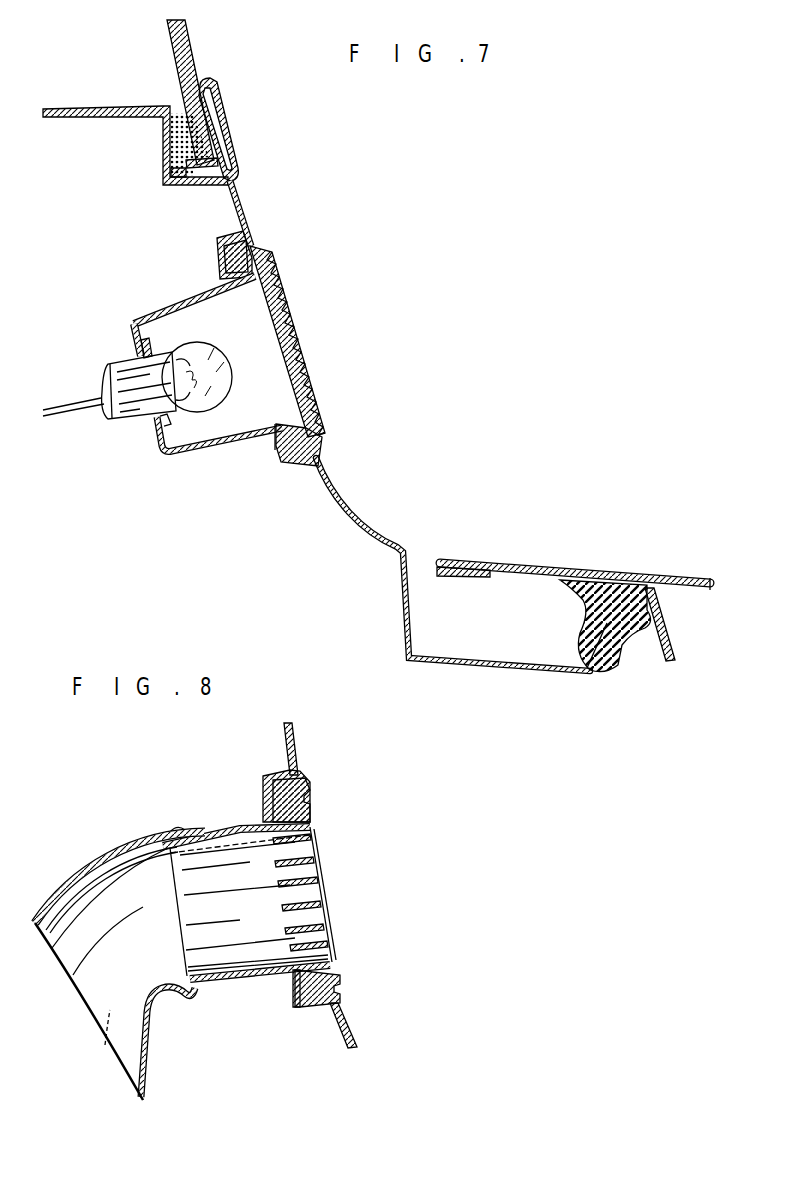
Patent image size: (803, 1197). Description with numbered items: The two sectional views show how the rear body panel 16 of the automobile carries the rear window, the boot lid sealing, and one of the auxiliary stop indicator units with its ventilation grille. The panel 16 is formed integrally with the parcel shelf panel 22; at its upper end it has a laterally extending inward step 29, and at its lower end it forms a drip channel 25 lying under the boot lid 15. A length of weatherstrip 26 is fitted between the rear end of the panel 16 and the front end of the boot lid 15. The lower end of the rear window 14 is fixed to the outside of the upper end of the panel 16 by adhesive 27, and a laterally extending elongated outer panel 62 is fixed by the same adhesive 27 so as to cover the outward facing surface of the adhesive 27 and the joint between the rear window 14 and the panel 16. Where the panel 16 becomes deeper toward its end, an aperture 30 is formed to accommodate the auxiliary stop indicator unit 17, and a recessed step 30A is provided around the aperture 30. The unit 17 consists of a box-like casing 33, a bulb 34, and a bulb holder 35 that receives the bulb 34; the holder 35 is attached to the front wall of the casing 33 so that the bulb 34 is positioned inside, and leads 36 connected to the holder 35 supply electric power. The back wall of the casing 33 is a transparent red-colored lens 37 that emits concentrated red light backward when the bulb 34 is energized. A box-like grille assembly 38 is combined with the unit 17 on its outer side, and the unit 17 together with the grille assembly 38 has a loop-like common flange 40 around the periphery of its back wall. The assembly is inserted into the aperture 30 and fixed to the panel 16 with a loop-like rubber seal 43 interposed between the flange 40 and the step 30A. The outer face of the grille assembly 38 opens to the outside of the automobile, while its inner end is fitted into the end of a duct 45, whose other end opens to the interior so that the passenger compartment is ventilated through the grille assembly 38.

In FIG. 7, the rear window 14 is at (194, 57).
In FIG. 7, the parcel shelf panel 22 is at (97, 107).
In FIG. 7, the adhesive 27 is at (183, 139).
In FIG. 7, the inward step 29 is at (184, 176).
In FIG. 7, the outer panel 62 is at (224, 122).
In FIG. 7, the panel 16 is at (229, 201).
In FIG. 8, the panel 16 is at (294, 740).
In FIG. 7, the drip channel 25 is at (500, 672).
In FIG. 7, the common flange 40 is at (258, 244).
In FIG. 8, the common flange 40 is at (308, 787).
In FIG. 7, the auxiliary stop indicator unit 17 is at (284, 276).
In FIG. 7, the lens 37 is at (298, 347).
In FIG. 7, the aperture 30 is at (250, 428).
In FIG. 8, the aperture 30 is at (263, 813).
In FIG. 7, the casing 33 is at (133, 321).
In FIG. 7, the bulb holder 35 is at (137, 418).
In FIG. 7, the bulb 34 is at (213, 397).
In FIG. 7, the leads 36 is at (63, 420).
In FIG. 7, the rubber seal 43 is at (278, 461).
In FIG. 8, the rubber seal 43 is at (296, 992).
In FIG. 7, the recessed step 30A is at (301, 464).
In FIG. 8, the recessed step 30A is at (302, 1006).
In FIG. 7, the boot lid 15 is at (633, 577).
In FIG. 7, the weatherstrip 26 is at (588, 615).
In FIG. 8, the grille assembly 38 is at (324, 882).
In FIG. 8, the duct 45 is at (80, 868).